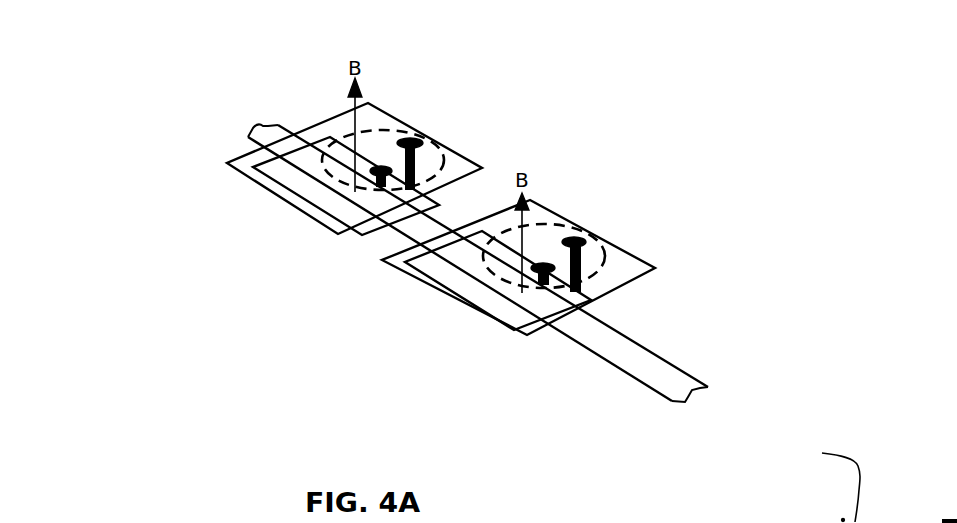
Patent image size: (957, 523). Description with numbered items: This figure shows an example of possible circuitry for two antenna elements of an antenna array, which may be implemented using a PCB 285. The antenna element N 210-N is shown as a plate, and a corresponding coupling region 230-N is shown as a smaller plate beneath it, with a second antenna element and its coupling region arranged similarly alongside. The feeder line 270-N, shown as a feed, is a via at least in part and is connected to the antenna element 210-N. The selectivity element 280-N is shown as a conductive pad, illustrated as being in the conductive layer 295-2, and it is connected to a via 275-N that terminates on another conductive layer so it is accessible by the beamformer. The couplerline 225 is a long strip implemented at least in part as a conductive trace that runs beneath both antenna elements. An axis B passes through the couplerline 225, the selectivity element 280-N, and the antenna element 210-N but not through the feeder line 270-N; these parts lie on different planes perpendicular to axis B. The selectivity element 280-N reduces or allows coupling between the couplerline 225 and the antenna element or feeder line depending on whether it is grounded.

The antenna element N 210-N is at (468, 163).
The coupling region N 230-N is at (315, 164).
The feeder line N 270-N is at (466, 161).
The via N 275-N is at (365, 176).
The selectivity element N 280-N is at (433, 198).
The couplerline 225 is at (655, 372).
The PCB 285 is at (827, 469).
The conductive layer 295-2 is at (869, 512).